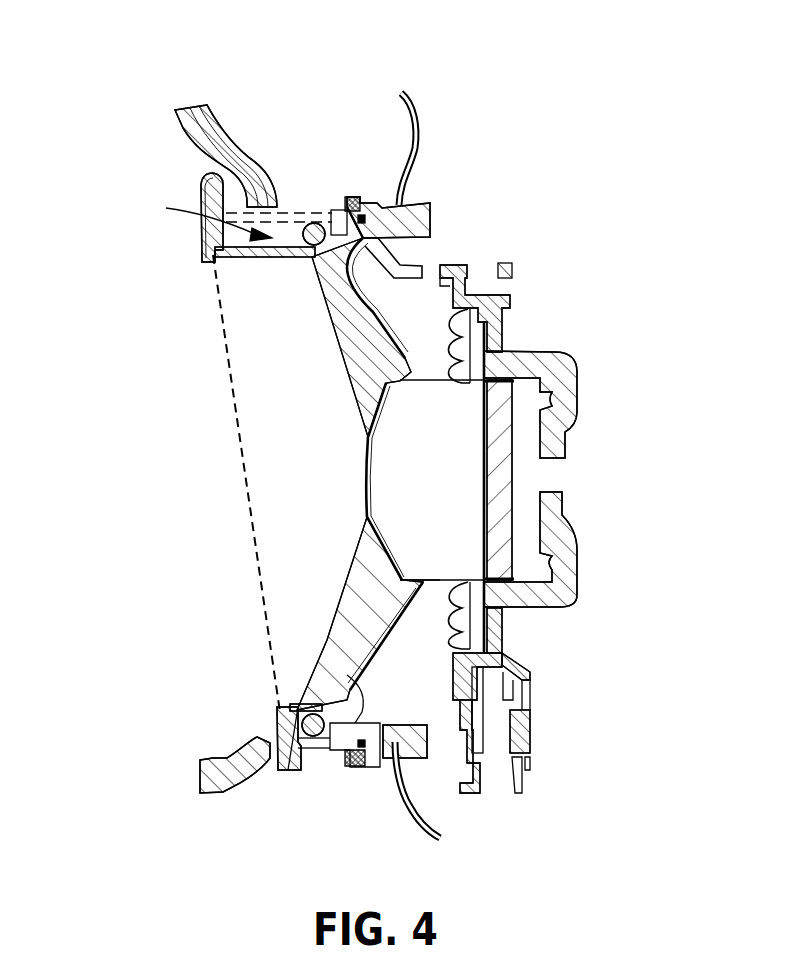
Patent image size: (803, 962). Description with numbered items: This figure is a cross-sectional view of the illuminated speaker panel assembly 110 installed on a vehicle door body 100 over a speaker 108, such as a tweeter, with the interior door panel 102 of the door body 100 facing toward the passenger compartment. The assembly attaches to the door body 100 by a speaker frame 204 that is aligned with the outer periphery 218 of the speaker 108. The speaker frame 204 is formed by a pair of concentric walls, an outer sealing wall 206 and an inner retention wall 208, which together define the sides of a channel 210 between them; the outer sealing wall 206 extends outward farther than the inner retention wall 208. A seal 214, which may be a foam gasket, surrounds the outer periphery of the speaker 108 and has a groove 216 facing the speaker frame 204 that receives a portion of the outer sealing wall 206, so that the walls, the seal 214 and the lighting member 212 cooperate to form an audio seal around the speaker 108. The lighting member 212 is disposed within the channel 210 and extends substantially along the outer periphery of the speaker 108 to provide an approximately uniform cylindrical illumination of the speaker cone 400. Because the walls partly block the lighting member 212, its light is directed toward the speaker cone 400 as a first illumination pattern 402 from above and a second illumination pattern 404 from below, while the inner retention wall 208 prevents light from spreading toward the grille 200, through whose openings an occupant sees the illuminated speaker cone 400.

The door body 100 is at (418, 130).
The interior door panel 102 is at (217, 143).
The speaker 108 is at (608, 466).
The illuminated speaker panel assembly 110 is at (113, 67).
The grille 200 is at (235, 406).
The speaker frame 204 is at (213, 240).
The outer sealing wall 206 is at (321, 214).
The inner retention wall 208 is at (273, 258).
The channel 210 is at (283, 790).
The lighting member 212 is at (308, 222).
The seal 214 is at (433, 208).
The groove 216 is at (350, 200).
The outer periphery 218 is at (462, 268).
The speaker cone 400 is at (363, 470).
The first illumination pattern 402 is at (347, 328).
The second illumination pattern 404 is at (363, 610).